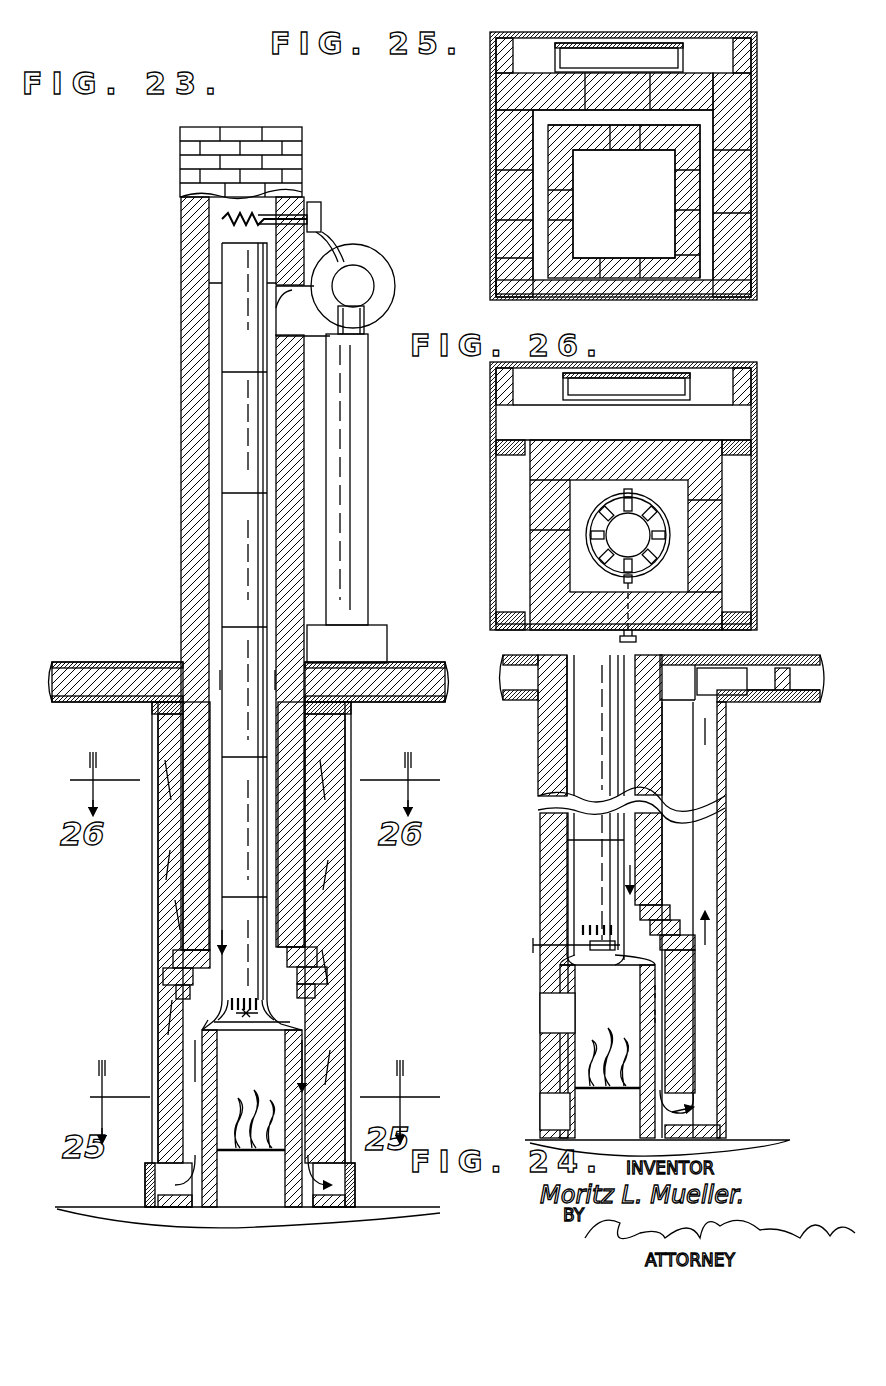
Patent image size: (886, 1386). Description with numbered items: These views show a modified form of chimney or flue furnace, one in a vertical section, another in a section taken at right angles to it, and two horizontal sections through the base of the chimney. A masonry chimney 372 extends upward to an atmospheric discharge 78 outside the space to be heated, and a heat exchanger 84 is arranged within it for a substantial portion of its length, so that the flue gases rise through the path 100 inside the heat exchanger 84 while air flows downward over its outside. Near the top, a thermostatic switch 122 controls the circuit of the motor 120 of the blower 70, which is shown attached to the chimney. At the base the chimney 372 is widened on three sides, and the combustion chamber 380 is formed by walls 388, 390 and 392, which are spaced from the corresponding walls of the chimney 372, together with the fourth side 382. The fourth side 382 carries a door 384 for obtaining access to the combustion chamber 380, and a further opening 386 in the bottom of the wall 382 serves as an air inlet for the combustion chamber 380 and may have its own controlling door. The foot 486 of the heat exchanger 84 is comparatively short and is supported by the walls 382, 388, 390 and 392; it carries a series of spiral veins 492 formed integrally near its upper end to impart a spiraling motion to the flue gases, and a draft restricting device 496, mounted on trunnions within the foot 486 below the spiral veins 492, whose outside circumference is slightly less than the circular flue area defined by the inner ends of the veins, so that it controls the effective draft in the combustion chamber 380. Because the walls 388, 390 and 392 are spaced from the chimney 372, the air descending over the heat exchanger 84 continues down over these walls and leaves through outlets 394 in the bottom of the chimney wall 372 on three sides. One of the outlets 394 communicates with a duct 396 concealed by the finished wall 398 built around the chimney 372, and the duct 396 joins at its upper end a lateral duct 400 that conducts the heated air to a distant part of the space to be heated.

In FIG. 23, the atmospheric discharge 78 is at (262, 127).
In FIG. 23, the flue gas path 100 is at (220, 230).
In FIG. 23, the thermostatic switch 122 is at (322, 210).
In FIG. 23, the blower 70 is at (375, 252).
In FIG. 23, the motor 120 is at (372, 285).
In FIG. 23, the chimney 372 is at (335, 918).
In FIG. 25, the chimney 372 is at (740, 238).
In FIG. 26, the chimney 372 is at (700, 538).
In FIG. 23, the heat exchanger 84 is at (273, 982).
In FIG. 26, the heat exchanger 84 is at (665, 520).
In FIG. 24, the heat exchanger 84 is at (605, 773).
In FIG. 23, the spiral veins 492 is at (228, 993).
In FIG. 26, the spiral veins 492 is at (660, 546).
In FIG. 24, the spiral veins 492 is at (580, 933).
In FIG. 23, the foot 486 is at (240, 1014).
In FIG. 24, the foot 486 is at (545, 948).
In FIG. 23, the draft restricting device 496 is at (262, 1020).
In FIG. 26, the draft restricting device 496 is at (615, 533).
In FIG. 24, the draft restricting device 496 is at (640, 953).
In FIG. 23, the combustion chamber 380 is at (275, 1055).
In FIG. 25, the combustion chamber 380 is at (665, 175).
In FIG. 24, the combustion chamber 380 is at (607, 1051).
In FIG. 23, the outlets 394 is at (145, 1180).
In FIG. 24, the outlets 394 is at (700, 1104).
In FIG. 25, the duct 396 is at (640, 55).
In FIG. 26, the duct 396 is at (655, 378).
In FIG. 24, the duct 396 is at (705, 983).
In FIG. 25, the finished wall 398 is at (755, 193).
In FIG. 26, the finished wall 398 is at (745, 365).
In FIG. 24, the finished wall 398 is at (722, 923).
In FIG. 25, the fourth side wall 382 is at (672, 300).
In FIG. 24, the fourth side wall 382 is at (540, 918).
In FIG. 25, the combustion chamber wall 388 is at (582, 213).
In FIG. 25, the combustion chamber wall 390 is at (590, 140).
In FIG. 25, the combustion chamber wall 392 is at (680, 228).
In FIG. 24, the lateral duct 400 is at (745, 675).
In FIG. 24, the door 384 is at (545, 1018).
In FIG. 24, the air inlet opening 386 is at (545, 1108).